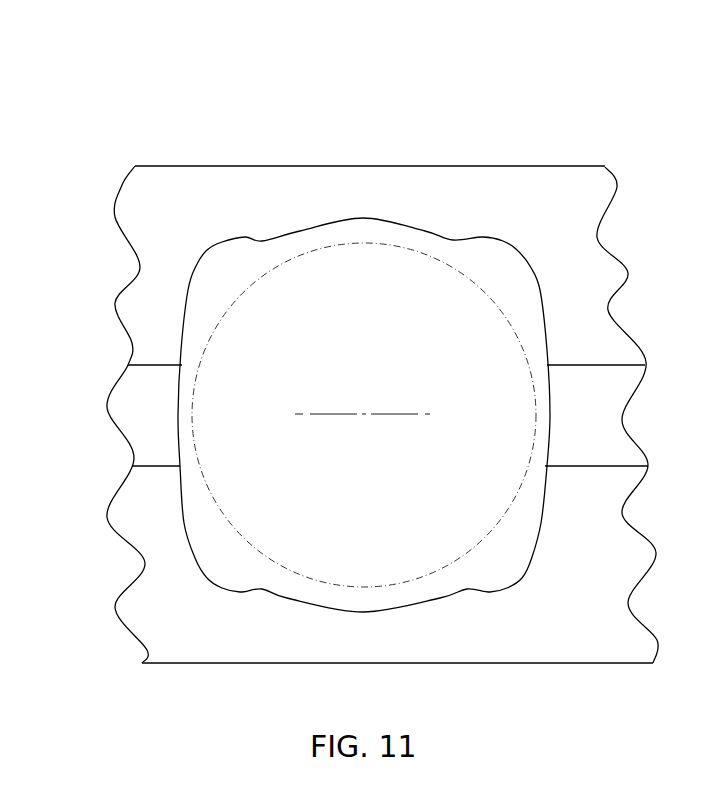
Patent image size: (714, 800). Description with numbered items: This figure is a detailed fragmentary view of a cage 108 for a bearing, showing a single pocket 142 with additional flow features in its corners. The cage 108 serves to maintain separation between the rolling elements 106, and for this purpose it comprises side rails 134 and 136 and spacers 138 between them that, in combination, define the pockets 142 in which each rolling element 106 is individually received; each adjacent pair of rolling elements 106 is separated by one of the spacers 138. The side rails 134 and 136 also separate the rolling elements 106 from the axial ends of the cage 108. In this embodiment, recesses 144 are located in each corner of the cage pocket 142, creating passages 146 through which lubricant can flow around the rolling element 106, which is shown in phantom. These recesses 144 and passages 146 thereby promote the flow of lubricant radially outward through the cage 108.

The cage 108 is at (560, 152).
The side rail 134 is at (203, 652).
The side rail 136 is at (198, 178).
The spacer 138 is at (120, 392).
The pocket 142 is at (353, 227).
The rolling element 106 is at (367, 260).
The recess 144 is at (207, 249).
The passage 146 is at (213, 288).